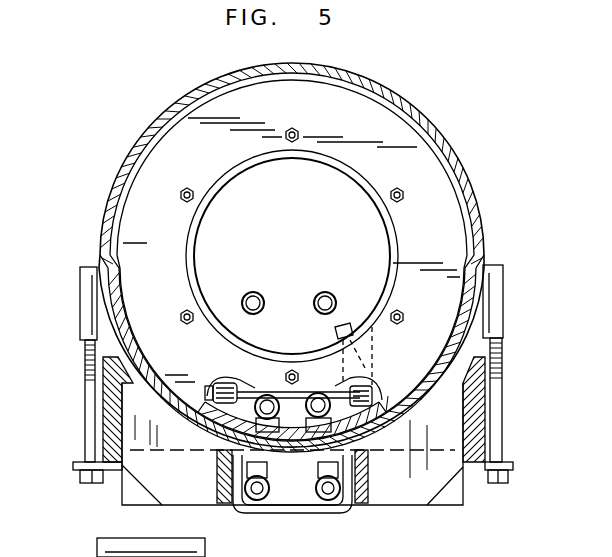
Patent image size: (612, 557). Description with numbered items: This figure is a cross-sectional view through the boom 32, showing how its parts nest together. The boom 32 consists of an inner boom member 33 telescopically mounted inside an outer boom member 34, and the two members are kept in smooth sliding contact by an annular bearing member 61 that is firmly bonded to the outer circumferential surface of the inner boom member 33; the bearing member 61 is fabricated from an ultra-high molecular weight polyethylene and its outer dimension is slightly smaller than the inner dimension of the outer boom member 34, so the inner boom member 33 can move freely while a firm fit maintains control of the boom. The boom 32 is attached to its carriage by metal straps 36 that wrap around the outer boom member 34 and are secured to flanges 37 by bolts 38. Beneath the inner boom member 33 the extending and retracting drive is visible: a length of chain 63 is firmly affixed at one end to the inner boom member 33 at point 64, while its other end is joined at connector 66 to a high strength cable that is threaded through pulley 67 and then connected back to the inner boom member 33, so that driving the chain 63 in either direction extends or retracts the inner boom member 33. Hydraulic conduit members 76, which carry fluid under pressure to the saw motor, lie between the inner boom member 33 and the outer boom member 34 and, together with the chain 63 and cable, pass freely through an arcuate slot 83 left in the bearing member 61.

The boom 32 is at (478, 165).
The inner boom member 33 is at (390, 232).
The outer boom member 34 is at (467, 198).
The metal straps 36 is at (433, 132).
The flanges 37 is at (75, 467).
The bolts 38 is at (80, 405).
The bearing member 61 is at (388, 140).
The chain 63 is at (212, 385).
The point 64 is at (382, 400).
The connector 66 is at (248, 392).
The pulley 67 is at (262, 393).
The hydraulic conduit 76 is at (314, 302).
The arcuate slot 83 is at (190, 443).